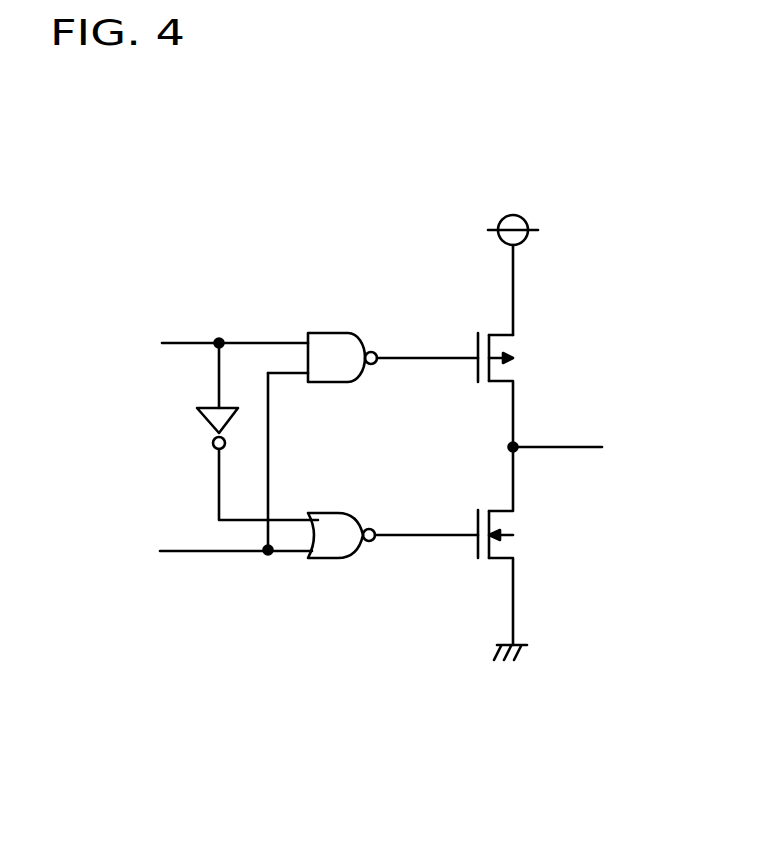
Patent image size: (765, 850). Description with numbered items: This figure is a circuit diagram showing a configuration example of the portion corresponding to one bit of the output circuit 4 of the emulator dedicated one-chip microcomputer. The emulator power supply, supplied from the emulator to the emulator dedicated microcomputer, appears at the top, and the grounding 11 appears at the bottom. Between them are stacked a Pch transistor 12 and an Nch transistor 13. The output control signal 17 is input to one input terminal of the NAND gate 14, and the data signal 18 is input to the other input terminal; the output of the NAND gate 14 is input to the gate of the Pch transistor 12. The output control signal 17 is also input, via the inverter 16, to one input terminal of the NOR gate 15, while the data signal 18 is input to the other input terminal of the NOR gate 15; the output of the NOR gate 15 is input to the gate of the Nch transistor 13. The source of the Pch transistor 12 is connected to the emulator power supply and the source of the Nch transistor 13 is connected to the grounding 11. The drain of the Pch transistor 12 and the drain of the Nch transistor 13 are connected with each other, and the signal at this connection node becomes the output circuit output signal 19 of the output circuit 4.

The output circuit 4 is at (578, 205).
The grounding 11 is at (508, 672).
The Pch transistor 12 is at (520, 352).
The Nch transistor 13 is at (520, 528).
The NAND gate 14 is at (327, 333).
The NOR gate 15 is at (320, 558).
The inverter 16 is at (207, 427).
The output control signal 17 is at (195, 343).
The data signal 18 is at (190, 551).
The output circuit output signal 19 is at (567, 446).